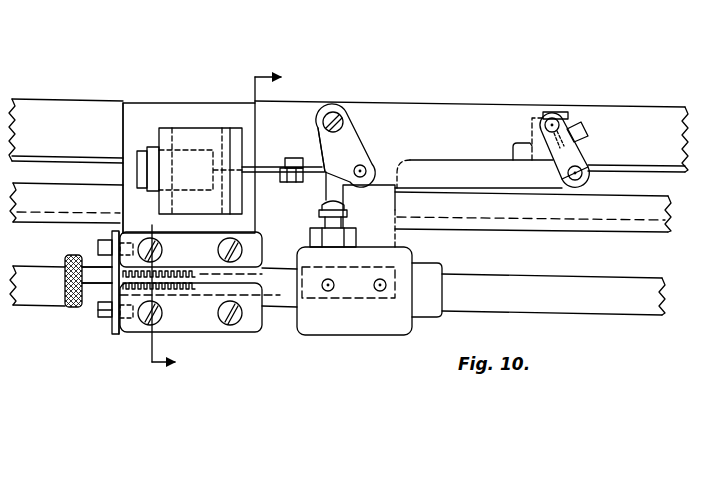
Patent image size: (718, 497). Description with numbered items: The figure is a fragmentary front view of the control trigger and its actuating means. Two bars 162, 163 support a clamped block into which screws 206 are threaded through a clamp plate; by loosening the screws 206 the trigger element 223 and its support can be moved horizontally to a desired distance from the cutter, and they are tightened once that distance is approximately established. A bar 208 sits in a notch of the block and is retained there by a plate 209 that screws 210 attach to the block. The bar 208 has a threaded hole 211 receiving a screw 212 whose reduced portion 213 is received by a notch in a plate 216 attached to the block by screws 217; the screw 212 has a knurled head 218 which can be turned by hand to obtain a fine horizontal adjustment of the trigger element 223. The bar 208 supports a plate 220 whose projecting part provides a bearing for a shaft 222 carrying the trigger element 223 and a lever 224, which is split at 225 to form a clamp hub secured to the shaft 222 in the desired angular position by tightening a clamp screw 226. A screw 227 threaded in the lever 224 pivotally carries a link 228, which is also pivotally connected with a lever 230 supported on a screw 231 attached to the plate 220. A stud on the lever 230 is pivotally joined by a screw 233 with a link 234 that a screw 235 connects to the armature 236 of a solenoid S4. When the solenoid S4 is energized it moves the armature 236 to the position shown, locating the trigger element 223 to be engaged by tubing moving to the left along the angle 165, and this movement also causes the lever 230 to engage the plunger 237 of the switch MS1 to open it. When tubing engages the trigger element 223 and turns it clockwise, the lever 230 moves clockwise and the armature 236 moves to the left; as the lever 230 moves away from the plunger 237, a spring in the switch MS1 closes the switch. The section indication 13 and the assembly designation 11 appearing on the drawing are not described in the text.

The switching mechanism assembly 11 is at (420, 80).
The section line 13- 13 is at (231, 223).
The bar 162 is at (50, 223).
The bar 163 is at (47, 267).
The angle 165 is at (55, 88).
The screws 206 is at (216, 250).
The bar 208 is at (280, 290).
The plate 209 is at (137, 332).
The screws 210 is at (216, 315).
The threaded hole 211 is at (245, 262).
The screw 212 is at (97, 287).
The reduced portion 213 is at (110, 283).
The plate 216 is at (101, 337).
The screws 217 is at (102, 320).
The knurled head 218 is at (65, 286).
The plate 220 is at (118, 144).
The shaft 222 is at (557, 113).
The trigger element 223 is at (519, 143).
The lever 224 is at (589, 158).
The split 225 is at (549, 113).
The clamp screw 226 is at (581, 124).
The screw 227 is at (579, 188).
The link 228 is at (458, 159).
The lever 230 is at (348, 137).
The screw 231 is at (334, 108).
The screw 233 is at (365, 162).
The link 234 is at (310, 160).
The screw 235 is at (284, 165).
The armature 236 is at (189, 168).
The plunger 237 is at (348, 207).
The solenoid S4 is at (195, 127).
The switch MS1 is at (357, 336).